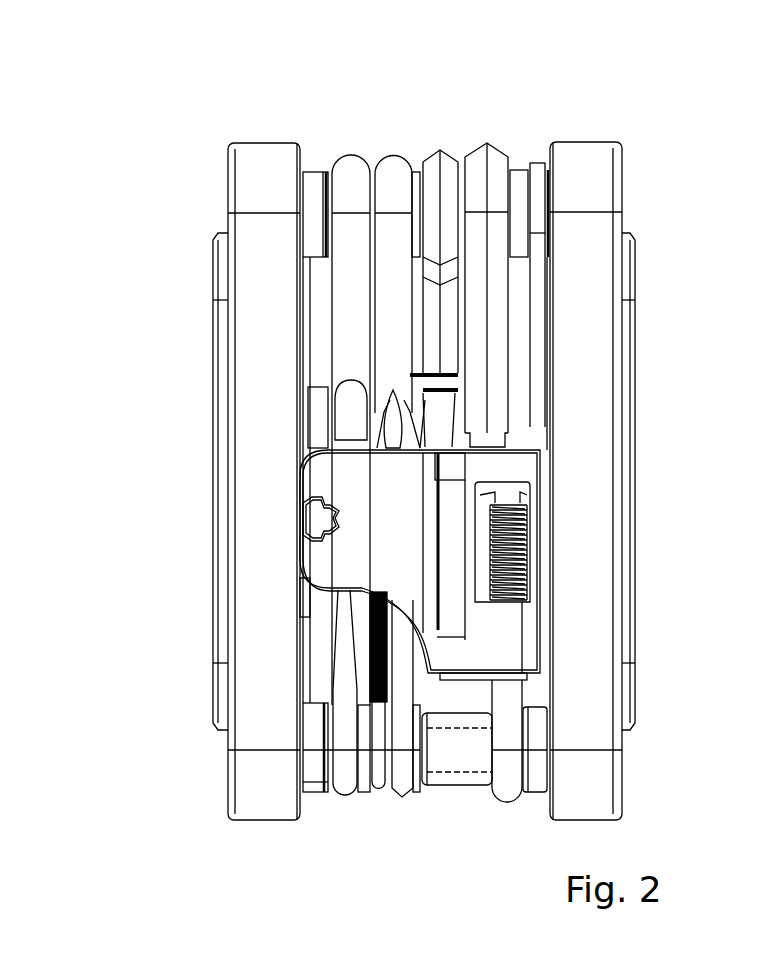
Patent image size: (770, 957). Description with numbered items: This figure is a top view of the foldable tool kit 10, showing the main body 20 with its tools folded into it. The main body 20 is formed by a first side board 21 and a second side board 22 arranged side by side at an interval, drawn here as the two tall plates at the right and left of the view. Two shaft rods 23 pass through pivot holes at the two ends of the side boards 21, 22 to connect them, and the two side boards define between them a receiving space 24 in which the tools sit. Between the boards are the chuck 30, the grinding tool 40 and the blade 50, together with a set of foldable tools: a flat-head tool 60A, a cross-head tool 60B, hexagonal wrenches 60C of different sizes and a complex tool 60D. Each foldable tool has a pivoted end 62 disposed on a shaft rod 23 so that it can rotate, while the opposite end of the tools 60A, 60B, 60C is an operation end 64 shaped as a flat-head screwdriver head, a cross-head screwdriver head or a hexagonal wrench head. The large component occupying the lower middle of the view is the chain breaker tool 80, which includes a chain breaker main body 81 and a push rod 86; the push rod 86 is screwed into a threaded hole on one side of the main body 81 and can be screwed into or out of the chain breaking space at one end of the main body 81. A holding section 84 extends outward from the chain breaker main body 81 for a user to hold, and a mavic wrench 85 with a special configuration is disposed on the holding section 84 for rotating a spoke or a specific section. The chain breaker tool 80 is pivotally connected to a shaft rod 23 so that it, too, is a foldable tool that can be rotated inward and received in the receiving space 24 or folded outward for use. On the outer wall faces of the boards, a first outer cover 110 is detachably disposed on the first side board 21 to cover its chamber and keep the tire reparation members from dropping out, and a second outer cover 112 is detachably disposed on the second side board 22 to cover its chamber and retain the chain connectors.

The foldable tool kit 10 is at (200, 115).
The main body 20 is at (634, 152).
The first side board 21 is at (605, 350).
The second side board 22 is at (252, 177).
The shaft rod 23 is at (475, 778).
The receiving space 24 is at (458, 690).
The chuck 30 is at (345, 805).
The grinding tool 40 is at (378, 805).
The blade 50 is at (521, 160).
The flat-head tool 60A is at (331, 140).
The cross-head tool 60B is at (396, 140).
The hexagonal wrench 60C is at (497, 140).
The complex tool 60D is at (318, 795).
The pivoted end 62 is at (400, 175).
The operation end 64 is at (345, 415).
The chain breaker tool 80 is at (520, 638).
The chain breaker main body 81 is at (507, 625).
The holding section 84 is at (328, 468).
The mavic wrench 85 is at (318, 542).
The push rod 86 is at (508, 727).
The first outer cover 110 is at (635, 528).
The second outer cover 112 is at (205, 270).